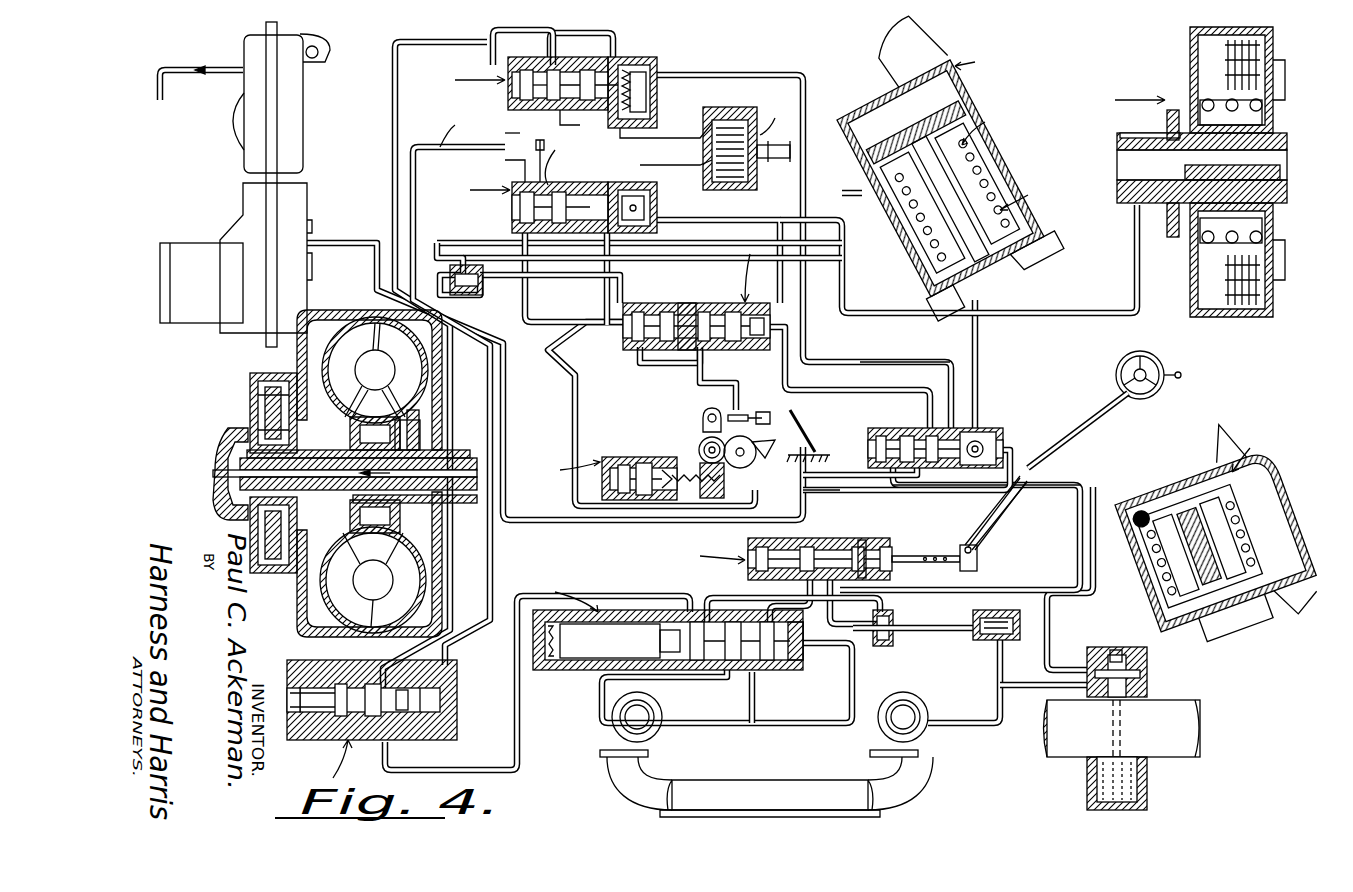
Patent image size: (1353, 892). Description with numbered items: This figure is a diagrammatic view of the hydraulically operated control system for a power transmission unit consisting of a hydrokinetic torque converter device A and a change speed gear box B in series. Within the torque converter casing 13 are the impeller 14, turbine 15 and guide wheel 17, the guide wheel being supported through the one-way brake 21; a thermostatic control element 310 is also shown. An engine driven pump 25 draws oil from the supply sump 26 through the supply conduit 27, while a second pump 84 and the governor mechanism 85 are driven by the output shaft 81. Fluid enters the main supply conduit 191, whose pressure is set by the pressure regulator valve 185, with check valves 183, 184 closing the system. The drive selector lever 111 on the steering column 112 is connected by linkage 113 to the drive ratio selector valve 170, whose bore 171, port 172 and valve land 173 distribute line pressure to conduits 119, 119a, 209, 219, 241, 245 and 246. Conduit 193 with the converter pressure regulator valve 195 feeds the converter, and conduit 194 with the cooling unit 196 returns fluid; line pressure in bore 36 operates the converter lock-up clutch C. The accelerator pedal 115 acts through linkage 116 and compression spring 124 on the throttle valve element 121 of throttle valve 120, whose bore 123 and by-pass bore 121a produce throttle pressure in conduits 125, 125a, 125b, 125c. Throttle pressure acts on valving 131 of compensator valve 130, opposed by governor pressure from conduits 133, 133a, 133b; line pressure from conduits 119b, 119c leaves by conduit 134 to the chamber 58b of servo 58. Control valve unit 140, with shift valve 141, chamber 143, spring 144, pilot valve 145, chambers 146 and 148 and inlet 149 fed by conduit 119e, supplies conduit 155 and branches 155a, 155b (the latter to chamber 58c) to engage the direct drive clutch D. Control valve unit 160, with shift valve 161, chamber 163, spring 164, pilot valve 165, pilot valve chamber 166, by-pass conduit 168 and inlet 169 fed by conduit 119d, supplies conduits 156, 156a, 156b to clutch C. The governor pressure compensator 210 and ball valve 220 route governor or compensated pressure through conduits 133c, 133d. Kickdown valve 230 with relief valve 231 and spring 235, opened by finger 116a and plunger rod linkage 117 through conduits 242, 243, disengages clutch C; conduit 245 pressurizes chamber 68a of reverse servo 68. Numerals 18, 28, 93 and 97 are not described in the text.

The torque converter casing 13 is at (312, 640).
The impeller or pump member 14 is at (388, 382).
The turbine or runner member 15 is at (352, 372).
The guide or stator member 17 is at (372, 418).
The turbine shaft 18 is at (450, 445).
The one-way brake device 21 is at (400, 438).
The engine driven pump 25 is at (660, 739).
The supply sump 26 is at (748, 790).
The supply conduit 27 is at (600, 768).
The rear pump intake 28 is at (905, 768).
The bore 36 is at (255, 411).
The servo 58 is at (935, 162).
The chamber on apply side of servo 58b is at (820, 222).
The chamber on band release side of servo 58c is at (990, 190).
The reverse gear train servo 68 is at (1213, 532).
The chamber of reverse servo 68a is at (1140, 480).
The transmission output shaft 81 is at (1175, 750).
The second pump 84 is at (871, 739).
The governor mechanism 85 is at (1148, 680).
The governor valve 93 is at (1087, 672).
The governor feed passage 97 is at (1003, 690).
The drive selector lever 111 is at (1170, 378).
The steering column 112 is at (1090, 400).
The linkage 113 is at (770, 420).
The accelerator pedal 115 is at (813, 432).
The linkage 116 is at (859, 467).
The finger-like projection 116a is at (754, 453).
The plunger rod linkage 117 is at (725, 420).
The conduit 119 is at (830, 490).
The conduit 119a is at (713, 516).
The conduit 119b is at (700, 384).
The conduit 119c is at (645, 365).
The supply conduit 119d is at (515, 133).
The supply conduit 119e is at (519, 165).
The throttle valve 120 is at (617, 466).
The throttle valve element 121 is at (640, 462).
The by-pass bore 121a is at (630, 450).
The bore 123 is at (636, 462).
The compression spring 124 is at (675, 510).
The conduit 125 is at (577, 380).
The branch conduit 125a is at (556, 330).
The branch conduit 125b is at (512, 116).
The branch conduit 125c is at (600, 290).
The compensator valve 130 is at (695, 290).
The valving of compensator valve 131 is at (682, 302).
The governor pressure supply conduit 133 is at (1050, 622).
The conduit 133a is at (870, 362).
The conduit 133b is at (785, 383).
The conduit 133c is at (978, 350).
The conduit 133d is at (770, 72).
The conduit 134 is at (700, 222).
The automatic control valve unit for direct drive clutch 140 is at (560, 198).
The shift valve 141 is at (554, 161).
The valve chamber 143 is at (520, 222).
The spring 144 is at (518, 208).
The pilot valve 145 is at (652, 204).
The chamber 146 is at (620, 240).
The chamber 148 is at (615, 185).
The line pressure inlet 149 is at (565, 161).
The conduit 155 is at (640, 258).
The branch conduit 155a is at (578, 258).
The branch conduit 155b is at (910, 255).
The conduit 156 is at (392, 118).
The conduit 156a is at (232, 470).
The branch conduit 156b is at (490, 625).
The automatic control valve unit for converter lock-up clutch 160 is at (559, 79).
The shift valve 161 is at (585, 58).
The chamber 163 is at (520, 98).
The spring 164 is at (518, 85).
The pilot valve 165 is at (650, 92).
The pilot valve chamber 166 is at (650, 70).
The by-pass conduit 168 is at (566, 33).
The line pressure inlet 169 is at (566, 121).
The drive ratio selector valve 170 is at (817, 533).
The bore 171 is at (830, 540).
The port 172 is at (812, 572).
The valve land 173 is at (790, 552).
The check valve 183 is at (890, 650).
The check valve 184 is at (972, 640).
The pressure regulator valve 185 is at (780, 670).
The main supply conduit 191 is at (872, 615).
The conduit 193 is at (636, 596).
The conduit 194 is at (377, 262).
The converter fluid pressure regulator valve 195 is at (445, 690).
The converter fluid cooling unit 196 is at (320, 203).
The conduit 209 is at (870, 476).
The governor pressure compensator 210 is at (946, 434).
The conduit 219 is at (915, 488).
The selector valve 220 is at (980, 432).
The kickdown valve 230 is at (749, 138).
The plate-like relief valve 231 is at (775, 160).
The spring 235 is at (728, 152).
The conduit 241 is at (545, 520).
The conduit 242 is at (695, 125).
The conduit 243 is at (644, 162).
The conduit 245 is at (915, 593).
The conduit 246 is at (800, 630).
The thermostatic control element 310 is at (520, 60).
The hydrokinetic torque converter device A is at (290, 355).
The change speed gear box B is at (230, 430).
The converter lock-up clutch C is at (263, 546).
The direct drive clutch D is at (1282, 75).